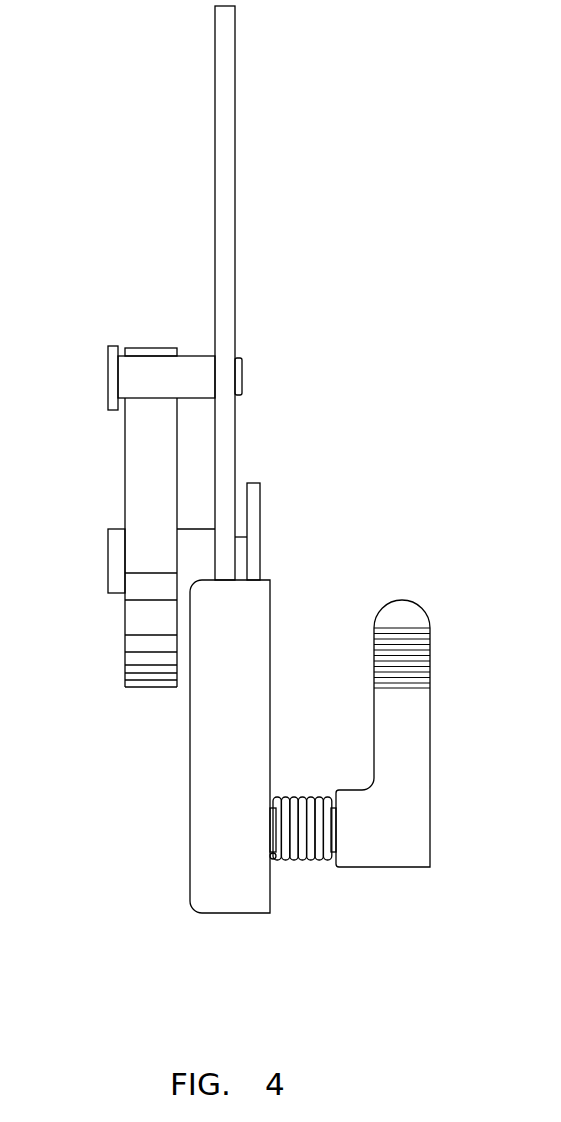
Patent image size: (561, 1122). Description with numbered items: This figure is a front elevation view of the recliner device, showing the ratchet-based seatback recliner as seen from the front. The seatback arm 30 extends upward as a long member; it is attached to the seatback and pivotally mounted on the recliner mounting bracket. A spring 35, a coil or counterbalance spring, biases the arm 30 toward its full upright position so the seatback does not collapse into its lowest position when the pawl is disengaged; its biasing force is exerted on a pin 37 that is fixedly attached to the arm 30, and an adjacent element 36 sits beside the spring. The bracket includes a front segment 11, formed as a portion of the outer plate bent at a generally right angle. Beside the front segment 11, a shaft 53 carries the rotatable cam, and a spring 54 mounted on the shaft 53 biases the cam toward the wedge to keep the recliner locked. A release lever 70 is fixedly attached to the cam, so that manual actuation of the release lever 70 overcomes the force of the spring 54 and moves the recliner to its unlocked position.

The front segment 11 is at (212, 768).
The seatback arm 30 is at (227, 160).
The spring 35 is at (140, 490).
The block 36 is at (115, 552).
The pin 37 is at (161, 378).
The shaft 53 is at (335, 798).
The spring 54 is at (305, 862).
The release lever 70 is at (417, 803).